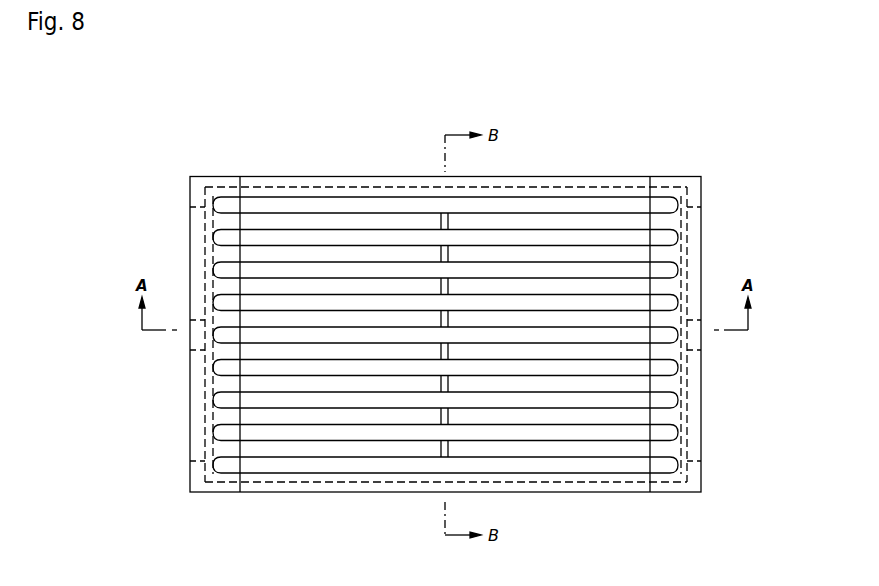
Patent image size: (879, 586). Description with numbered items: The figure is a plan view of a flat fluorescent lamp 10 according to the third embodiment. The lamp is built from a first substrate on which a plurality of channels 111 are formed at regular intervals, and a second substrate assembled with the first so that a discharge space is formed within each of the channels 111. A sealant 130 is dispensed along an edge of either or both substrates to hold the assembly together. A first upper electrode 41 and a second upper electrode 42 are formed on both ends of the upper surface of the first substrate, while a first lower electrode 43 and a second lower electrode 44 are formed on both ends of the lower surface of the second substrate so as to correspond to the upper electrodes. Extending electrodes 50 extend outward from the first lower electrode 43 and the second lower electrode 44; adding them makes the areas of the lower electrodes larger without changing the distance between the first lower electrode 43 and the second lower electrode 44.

The heat dissipation device 10 is at (310, 186).
The first upper electrode 41 is at (208, 186).
The second upper electrode 42 is at (688, 186).
The first lower electrode 43 is at (205, 417).
The second lower electrode 44 is at (678, 415).
The extending electrodes 50 is at (444, 214).
The channels 111 is at (592, 208).
The sealant 130 is at (205, 227).